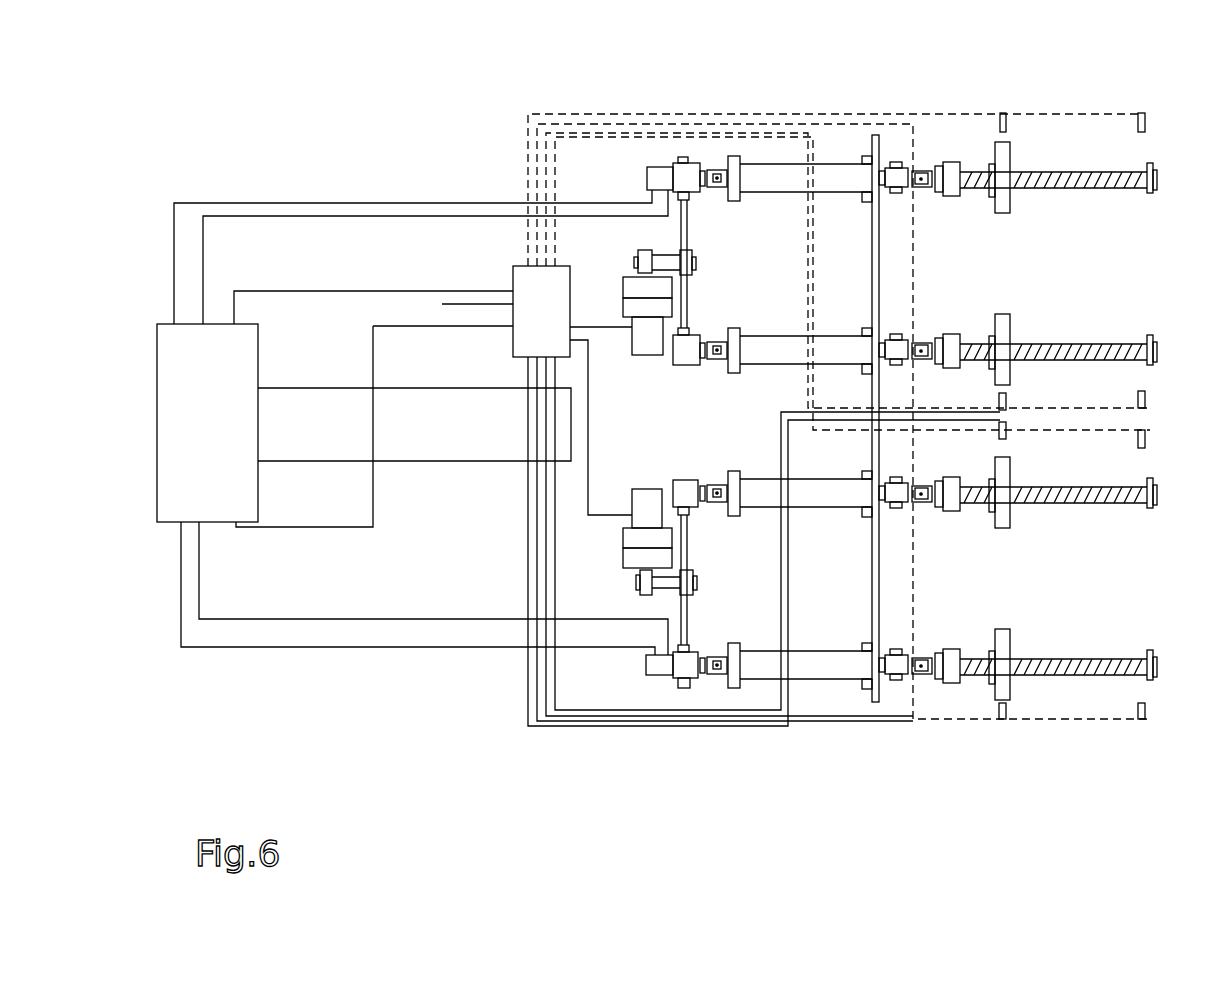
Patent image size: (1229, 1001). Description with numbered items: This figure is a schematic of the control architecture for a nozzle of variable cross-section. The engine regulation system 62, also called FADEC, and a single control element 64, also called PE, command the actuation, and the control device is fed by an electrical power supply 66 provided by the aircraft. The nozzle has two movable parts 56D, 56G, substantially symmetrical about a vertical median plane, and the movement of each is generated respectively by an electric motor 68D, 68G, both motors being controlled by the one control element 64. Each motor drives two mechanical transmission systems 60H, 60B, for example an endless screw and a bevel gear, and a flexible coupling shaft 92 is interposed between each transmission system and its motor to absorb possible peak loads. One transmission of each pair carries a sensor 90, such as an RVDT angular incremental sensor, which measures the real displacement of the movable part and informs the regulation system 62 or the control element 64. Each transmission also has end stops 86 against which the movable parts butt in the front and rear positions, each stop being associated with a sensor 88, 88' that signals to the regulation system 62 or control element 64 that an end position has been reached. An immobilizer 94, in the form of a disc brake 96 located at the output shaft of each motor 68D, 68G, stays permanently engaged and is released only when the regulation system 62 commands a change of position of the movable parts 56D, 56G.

The regulation system 62 is at (207, 423).
The control element 64 is at (541, 311).
The electrical power supply 66 is at (467, 300).
The sensor 90 is at (658, 172).
The flexible coupling shaft 92 is at (685, 233).
The immobilizer 94 is at (619, 292).
The disc brake 96 is at (637, 292).
The electric motor 68D is at (646, 349).
The electric motor 68G is at (632, 488).
The mechanical transmission system 60H is at (788, 191).
The mechanical transmission system 60B is at (780, 365).
The movable part 56D is at (1000, 323).
The movable part 56G is at (1000, 527).
The sensor 88 is at (1020, 76).
The sensor 88' is at (1183, 105).
The stop 86 is at (1000, 148).